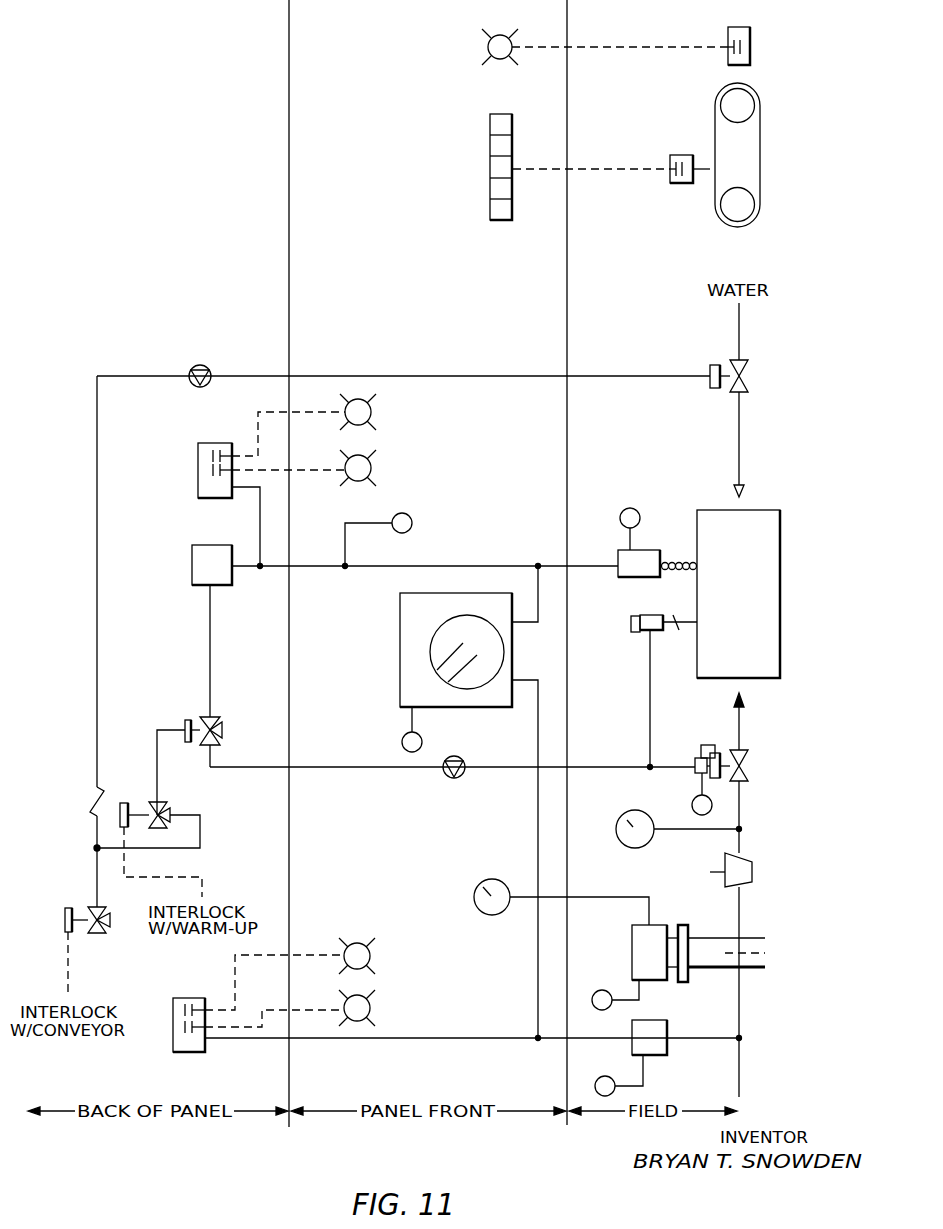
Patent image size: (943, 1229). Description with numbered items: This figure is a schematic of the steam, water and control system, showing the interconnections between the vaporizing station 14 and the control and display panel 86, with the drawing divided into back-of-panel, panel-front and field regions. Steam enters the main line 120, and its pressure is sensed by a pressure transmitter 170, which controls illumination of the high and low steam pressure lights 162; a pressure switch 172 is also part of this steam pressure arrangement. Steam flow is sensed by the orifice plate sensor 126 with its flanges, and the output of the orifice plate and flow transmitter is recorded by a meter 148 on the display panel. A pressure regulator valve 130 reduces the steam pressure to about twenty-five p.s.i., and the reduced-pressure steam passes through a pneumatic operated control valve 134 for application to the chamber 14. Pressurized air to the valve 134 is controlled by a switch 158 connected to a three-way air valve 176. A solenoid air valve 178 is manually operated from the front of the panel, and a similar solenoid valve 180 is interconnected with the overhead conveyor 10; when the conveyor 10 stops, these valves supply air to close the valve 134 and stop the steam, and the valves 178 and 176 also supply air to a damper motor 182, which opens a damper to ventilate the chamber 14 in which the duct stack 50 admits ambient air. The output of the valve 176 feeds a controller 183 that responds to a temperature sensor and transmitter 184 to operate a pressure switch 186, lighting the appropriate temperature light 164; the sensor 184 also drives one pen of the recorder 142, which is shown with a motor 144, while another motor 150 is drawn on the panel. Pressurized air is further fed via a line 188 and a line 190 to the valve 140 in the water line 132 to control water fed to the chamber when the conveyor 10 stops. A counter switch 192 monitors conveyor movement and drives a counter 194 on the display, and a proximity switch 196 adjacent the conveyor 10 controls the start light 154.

The conveyor 10 is at (760, 138).
The vaporizer station 14 is at (781, 566).
The duct stack 50 is at (645, 614).
The control and display panel 86 is at (182, 328).
The main line 120 is at (768, 1083).
The orifice plate sensor 126 is at (767, 946).
The pressure regulator valve 130 is at (742, 855).
The water line 132 is at (739, 333).
The pneumatic operated control valve 134 is at (747, 761).
The valve 140 is at (745, 372).
The recorder 142 is at (512, 635).
The controller motor 144 is at (450, 717).
The meter 148 is at (515, 880).
The motor 150 is at (438, 512).
The start light 154 is at (488, 47).
The switch 158 is at (492, 731).
The high and low steam pressure lights 162 is at (345, 947).
The temperature light 164 is at (346, 406).
The pressure transmitter 170 is at (655, 1020).
The pressure switch 172 is at (208, 998).
The three-way air valve 176 is at (222, 729).
The solenoid air valve 178 is at (160, 803).
The solenoid valve 180 is at (127, 902).
The damper motor 182 is at (631, 620).
The controller 183 is at (228, 545).
The temperature sensor and transmitter 184 is at (642, 549).
The pressure switch 186 is at (215, 443).
The line 188 is at (202, 835).
The line 190 is at (97, 428).
The counter switch 192 is at (680, 155).
The counter 194 is at (490, 208).
The proximity switch 196 is at (745, 27).